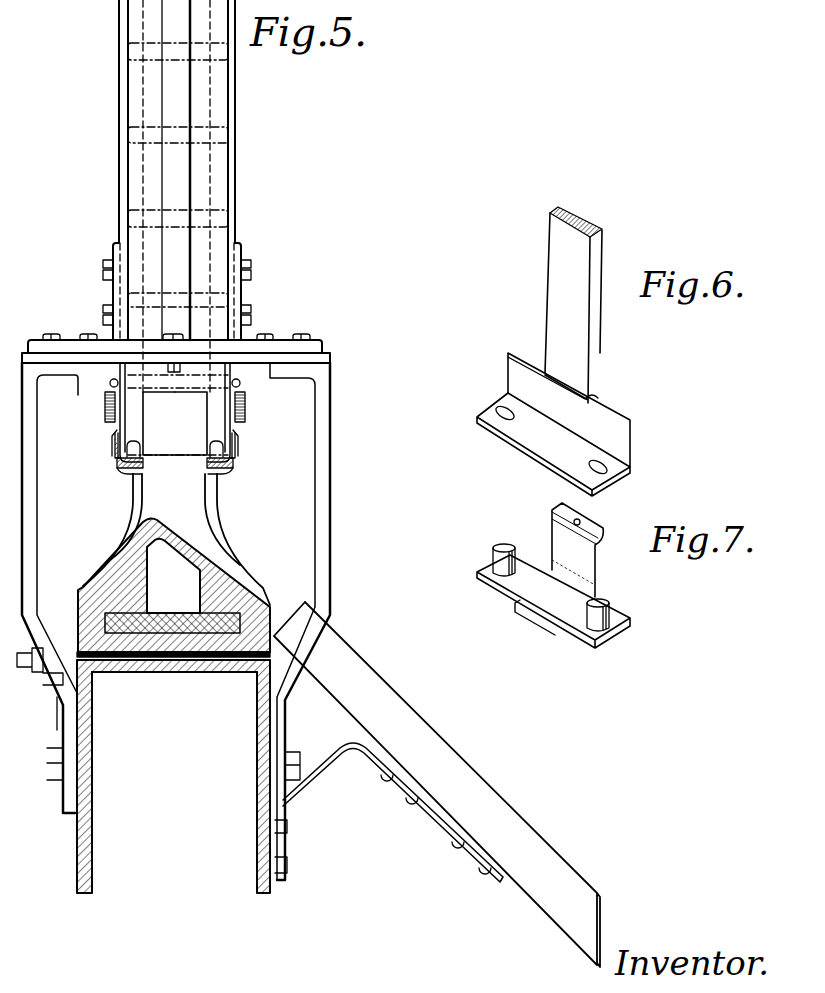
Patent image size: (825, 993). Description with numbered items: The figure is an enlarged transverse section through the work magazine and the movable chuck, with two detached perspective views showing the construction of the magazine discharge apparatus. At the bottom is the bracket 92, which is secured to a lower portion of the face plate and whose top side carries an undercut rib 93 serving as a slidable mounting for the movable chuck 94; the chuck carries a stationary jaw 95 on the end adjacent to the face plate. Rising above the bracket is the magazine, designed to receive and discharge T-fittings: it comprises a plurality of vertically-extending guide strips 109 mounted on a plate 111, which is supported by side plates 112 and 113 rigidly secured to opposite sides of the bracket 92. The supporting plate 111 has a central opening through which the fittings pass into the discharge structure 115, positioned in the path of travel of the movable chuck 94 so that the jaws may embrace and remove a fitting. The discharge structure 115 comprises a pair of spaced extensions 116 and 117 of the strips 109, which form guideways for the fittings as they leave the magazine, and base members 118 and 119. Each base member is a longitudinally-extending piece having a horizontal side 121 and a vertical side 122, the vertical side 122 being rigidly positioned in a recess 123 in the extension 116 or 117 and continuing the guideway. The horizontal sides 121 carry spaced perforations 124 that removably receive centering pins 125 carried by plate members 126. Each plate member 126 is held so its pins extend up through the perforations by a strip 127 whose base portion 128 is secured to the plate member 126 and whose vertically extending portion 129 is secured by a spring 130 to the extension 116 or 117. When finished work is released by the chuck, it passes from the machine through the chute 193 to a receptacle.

In FIG. 5, the bracket 92 is at (172, 872).
In FIG. 5, the undercut rib 93 is at (170, 622).
In FIG. 5, the movable chuck 94 is at (240, 580).
In FIG. 5, the stationary jaw 95 is at (157, 392).
In FIG. 5, the guide strips 109 is at (119, 178).
In FIG. 5, the supporting plate 111 is at (312, 360).
In FIG. 5, the side plate 112 is at (33, 441).
In FIG. 5, the side plate 113 is at (320, 430).
In FIG. 5, the discharge structure 115 is at (176, 539).
In FIG. 5, the extension 116 is at (127, 414).
In FIG. 5, the extension 117 is at (230, 412).
In FIG. 6, the extension 117 is at (597, 353).
In FIG. 5, the base member 118 is at (125, 462).
In FIG. 5, the base member 119 is at (235, 462).
In FIG. 6, the horizontal side 121 is at (612, 479).
In FIG. 5, the vertical side 122 is at (118, 437).
In FIG. 6, the vertical side 122 is at (632, 426).
In FIG. 6, the recess 123 is at (597, 400).
In FIG. 6, the perforations 124 is at (505, 418).
In FIG. 5, the centering pins 125 is at (212, 450).
In FIG. 7, the centering pins 125 is at (500, 545).
In FIG. 5, the plate member 126 is at (122, 469).
In FIG. 7, the plate member 126 is at (545, 594).
In FIG. 7, the strip 127 is at (578, 555).
In FIG. 5, the base portion 128 is at (207, 464).
In FIG. 7, the base portion 128 is at (555, 626).
In FIG. 5, the vertically extending portion 129 is at (115, 453).
In FIG. 7, the vertically extending portion 129 is at (585, 578).
In FIG. 5, the spring 130 is at (105, 407).
In FIG. 5, the chute 193 is at (445, 756).